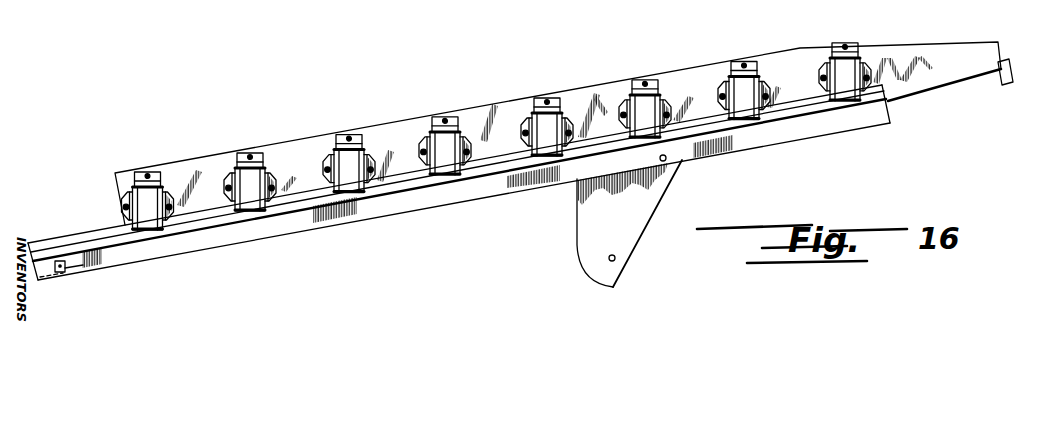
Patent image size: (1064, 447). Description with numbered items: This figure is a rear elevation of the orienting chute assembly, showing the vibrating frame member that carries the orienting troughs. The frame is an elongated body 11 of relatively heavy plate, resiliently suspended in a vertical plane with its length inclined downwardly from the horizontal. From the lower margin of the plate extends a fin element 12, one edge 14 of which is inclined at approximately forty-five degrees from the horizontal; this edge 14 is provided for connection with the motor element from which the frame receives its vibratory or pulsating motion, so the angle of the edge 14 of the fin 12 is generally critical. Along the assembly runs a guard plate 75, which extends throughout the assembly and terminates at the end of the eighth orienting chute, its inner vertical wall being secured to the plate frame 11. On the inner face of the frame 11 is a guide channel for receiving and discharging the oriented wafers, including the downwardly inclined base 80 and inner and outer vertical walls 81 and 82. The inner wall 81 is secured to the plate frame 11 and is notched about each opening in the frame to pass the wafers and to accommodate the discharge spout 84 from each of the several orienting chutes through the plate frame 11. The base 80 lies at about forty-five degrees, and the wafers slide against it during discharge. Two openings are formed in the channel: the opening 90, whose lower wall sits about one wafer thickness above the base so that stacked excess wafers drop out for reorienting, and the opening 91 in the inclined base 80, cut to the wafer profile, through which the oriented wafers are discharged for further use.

The elongated body 11 is at (932, 48).
The fin element 12 is at (585, 222).
The edge 14 is at (660, 207).
The guard plate 75 is at (1003, 83).
The base 80 is at (218, 248).
The inner vertical wall 81 is at (398, 180).
The outer vertical wall 82 is at (284, 228).
The discharge spout 84 is at (218, 178).
The discharge opening 90 is at (84, 268).
The discharge opening 91 is at (60, 272).